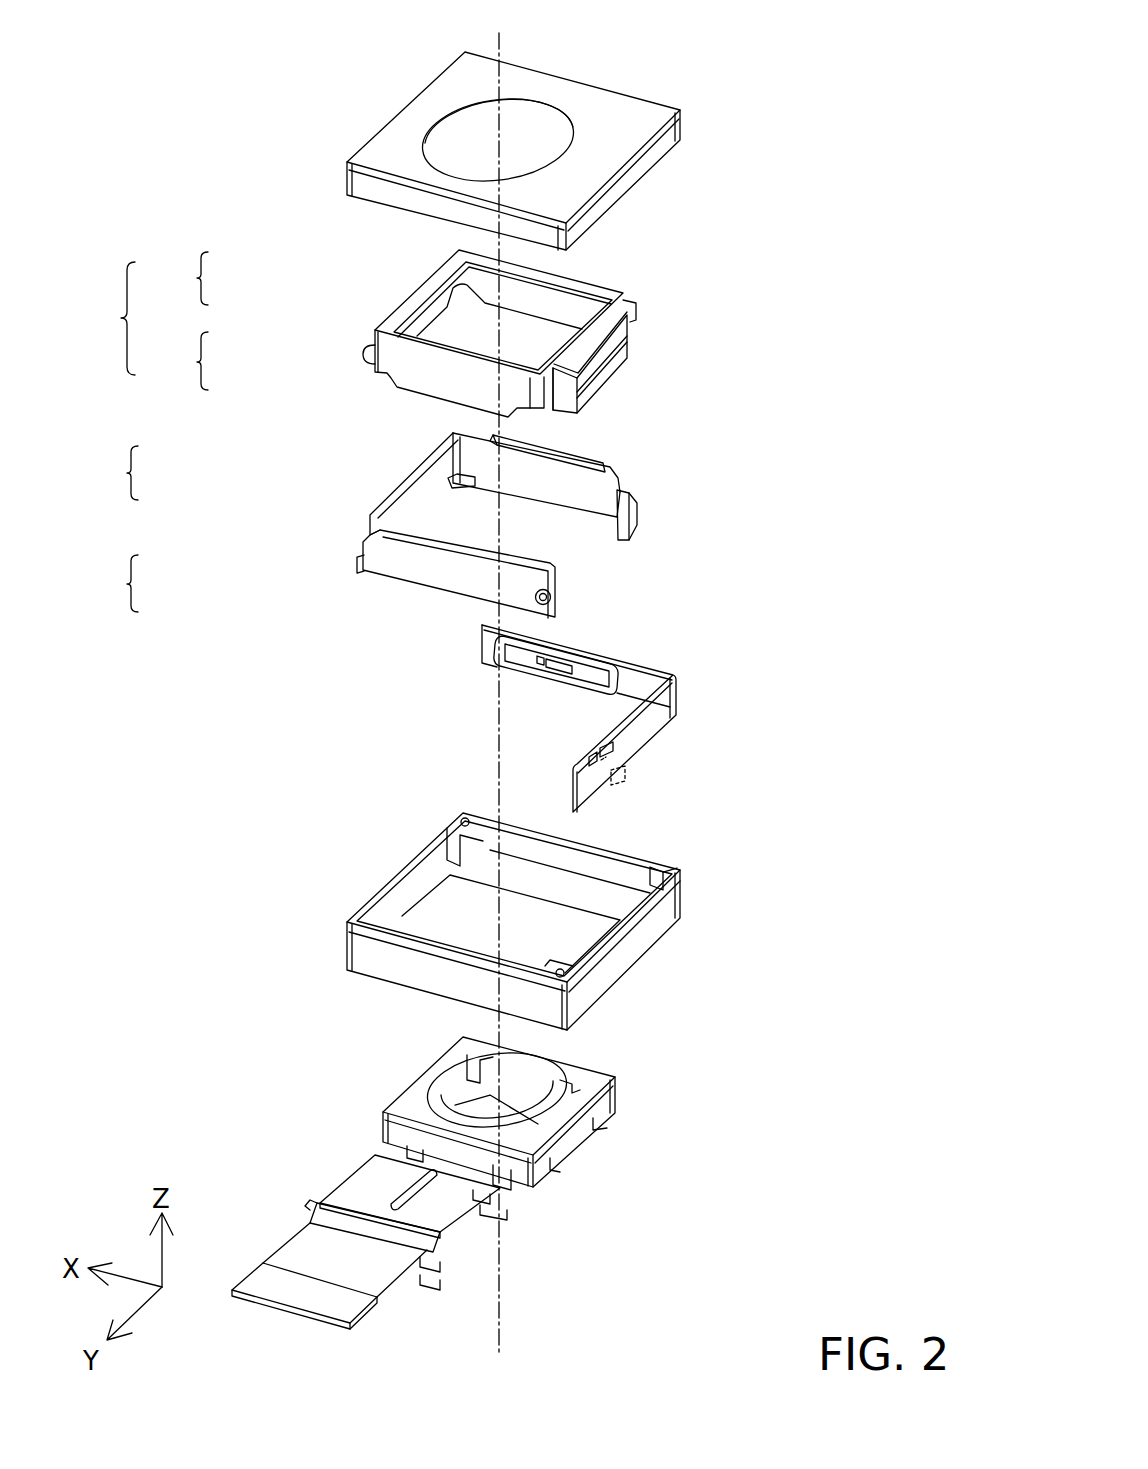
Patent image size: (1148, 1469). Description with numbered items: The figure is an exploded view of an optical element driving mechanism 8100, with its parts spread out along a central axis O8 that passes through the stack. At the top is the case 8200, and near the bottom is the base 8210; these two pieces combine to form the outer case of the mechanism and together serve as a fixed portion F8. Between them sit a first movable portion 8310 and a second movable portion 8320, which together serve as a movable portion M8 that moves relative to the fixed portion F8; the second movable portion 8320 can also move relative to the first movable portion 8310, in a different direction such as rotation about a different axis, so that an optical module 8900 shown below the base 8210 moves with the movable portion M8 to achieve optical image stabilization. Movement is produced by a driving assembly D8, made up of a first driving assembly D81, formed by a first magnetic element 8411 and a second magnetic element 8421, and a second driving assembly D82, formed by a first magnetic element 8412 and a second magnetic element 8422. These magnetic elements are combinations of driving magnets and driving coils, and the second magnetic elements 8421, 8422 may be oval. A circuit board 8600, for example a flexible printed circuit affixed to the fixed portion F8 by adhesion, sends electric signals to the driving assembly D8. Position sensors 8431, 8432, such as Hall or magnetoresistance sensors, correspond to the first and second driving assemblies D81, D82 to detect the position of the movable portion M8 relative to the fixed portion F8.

The optical element driving mechanism 8100 is at (271, 27).
The main axis O8 is at (498, 678).
The driving assembly D8 is at (111, 318).
The first driving assembly D81 is at (175, 278).
The second driving assembly D82 is at (175, 361).
The fixed portion F8 is at (115, 473).
The movable portion M8 is at (110, 583).
The case 8200 is at (632, 175).
The base 8210 is at (630, 952).
The first movable portion 8310 is at (613, 302).
The second movable portion 8320 is at (637, 527).
The first magnetic element 8411 is at (613, 350).
The first magnetic element 8412 is at (580, 460).
The second magnetic element 8421 is at (612, 747).
The second magnetic element 8422 is at (552, 657).
The position sensor 8431 is at (620, 775).
The position sensor 8432 is at (565, 668).
The circuit board 8600 is at (655, 712).
The optical module 8900 is at (618, 1108).